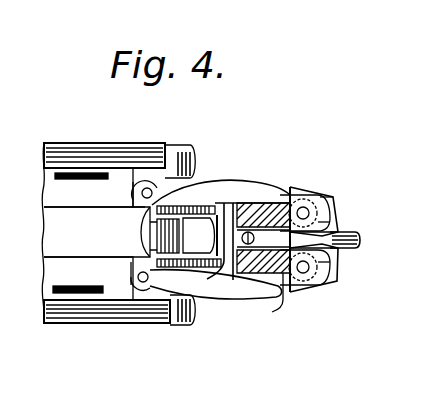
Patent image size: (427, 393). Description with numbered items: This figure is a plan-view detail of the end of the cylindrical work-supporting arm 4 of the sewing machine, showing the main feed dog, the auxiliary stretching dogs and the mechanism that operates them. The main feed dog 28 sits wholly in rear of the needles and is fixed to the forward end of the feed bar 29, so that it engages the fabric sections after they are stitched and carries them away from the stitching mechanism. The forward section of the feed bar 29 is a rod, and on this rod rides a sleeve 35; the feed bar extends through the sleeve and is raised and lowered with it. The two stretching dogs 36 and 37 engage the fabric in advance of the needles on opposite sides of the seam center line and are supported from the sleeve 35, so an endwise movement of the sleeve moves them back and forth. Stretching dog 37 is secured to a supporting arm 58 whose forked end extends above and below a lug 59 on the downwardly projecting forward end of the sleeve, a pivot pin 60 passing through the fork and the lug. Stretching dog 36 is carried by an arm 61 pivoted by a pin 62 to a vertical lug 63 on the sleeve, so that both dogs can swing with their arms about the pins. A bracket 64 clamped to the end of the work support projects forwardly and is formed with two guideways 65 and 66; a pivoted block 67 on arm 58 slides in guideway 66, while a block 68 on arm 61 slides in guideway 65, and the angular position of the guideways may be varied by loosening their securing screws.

The cylindrical work-supporting arm 4 is at (54, 315).
The main feed dog 28 is at (153, 230).
The feed bar 29 is at (161, 204).
The sleeve 35 is at (97, 234).
The stretching dog 36 is at (298, 204).
The stretching dog 37 is at (284, 280).
The supporting arm 58 is at (222, 289).
The lug 59 is at (127, 282).
The pivot pin 60 is at (143, 283).
The arm 61 is at (241, 190).
The pin 62 is at (150, 188).
The vertical lug 63 is at (128, 192).
The bracket 64 is at (340, 238).
The guideway 65 is at (331, 199).
The guideway 66 is at (333, 283).
The pivoted block 67 is at (330, 264).
The block 68 is at (331, 222).